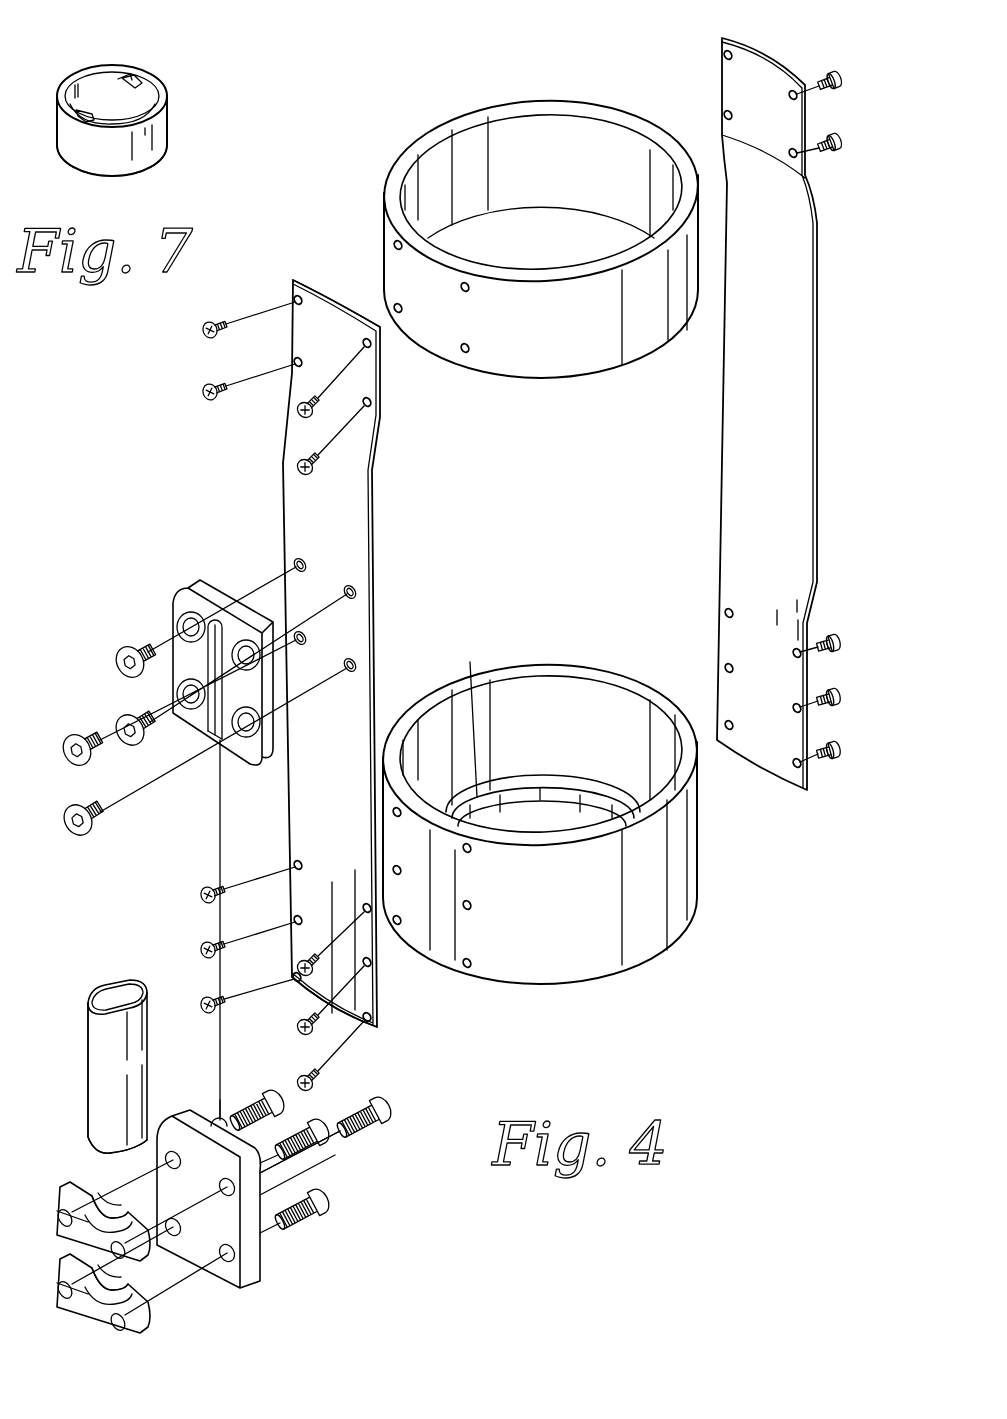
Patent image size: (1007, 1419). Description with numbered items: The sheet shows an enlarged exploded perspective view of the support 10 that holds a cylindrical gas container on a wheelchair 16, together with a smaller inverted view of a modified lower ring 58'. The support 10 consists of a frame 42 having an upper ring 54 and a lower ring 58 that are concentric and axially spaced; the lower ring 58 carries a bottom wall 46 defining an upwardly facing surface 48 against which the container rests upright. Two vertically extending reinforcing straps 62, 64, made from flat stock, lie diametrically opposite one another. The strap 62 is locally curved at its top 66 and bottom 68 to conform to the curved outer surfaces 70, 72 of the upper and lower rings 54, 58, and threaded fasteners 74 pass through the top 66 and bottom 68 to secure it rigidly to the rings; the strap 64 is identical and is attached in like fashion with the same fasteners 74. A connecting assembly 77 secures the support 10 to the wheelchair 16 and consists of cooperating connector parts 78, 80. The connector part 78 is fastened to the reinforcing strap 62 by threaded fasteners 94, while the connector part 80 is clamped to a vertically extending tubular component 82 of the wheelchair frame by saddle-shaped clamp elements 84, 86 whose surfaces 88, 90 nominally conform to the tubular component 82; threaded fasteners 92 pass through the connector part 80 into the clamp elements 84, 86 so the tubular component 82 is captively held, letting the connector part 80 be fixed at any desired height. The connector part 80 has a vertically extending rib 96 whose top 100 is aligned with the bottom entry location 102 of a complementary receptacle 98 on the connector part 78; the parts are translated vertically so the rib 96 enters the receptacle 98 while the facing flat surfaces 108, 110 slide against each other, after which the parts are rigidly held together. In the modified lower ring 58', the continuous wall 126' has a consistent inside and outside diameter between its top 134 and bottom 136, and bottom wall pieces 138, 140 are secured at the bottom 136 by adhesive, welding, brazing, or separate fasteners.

In FIG. 4, the support 10 is at (655, 64).
In FIG. 4, the wheelchair 16 is at (106, 978).
In FIG. 4, the frame 42 is at (760, 812).
In FIG. 4, the bottom wall 46 is at (550, 787).
In FIG. 4, the upwardly facing surface 48 is at (470, 662).
In FIG. 4, the upper ring 54 is at (560, 132).
In FIG. 4, the lower ring 58 is at (540, 780).
In FIG. 4, the reinforcing strap 62 is at (353, 493).
In FIG. 4, the reinforcing strap 64 is at (745, 425).
In FIG. 4, the top of strap 66 is at (325, 315).
In FIG. 4, the bottom of strap 68 is at (372, 983).
In FIG. 4, the curved outer surface 70 is at (560, 355).
In FIG. 4, the curved outer surface 72 is at (588, 940).
In FIG. 4, the threaded fasteners 74 is at (207, 320).
In FIG. 4, the connecting assembly 77 is at (88, 882).
In FIG. 4, the connector part 78 is at (205, 592).
In FIG. 4, the connector part 80 is at (233, 1220).
In FIG. 4, the tubular component 82 is at (107, 1035).
In FIG. 4, the saddle-shaped clamp element 84 is at (80, 1190).
In FIG. 4, the saddle-shaped clamp element 86 is at (78, 1265).
In FIG. 4, the conforming surface 88 is at (110, 1210).
In FIG. 4, the conforming surface 90 is at (105, 1275).
In FIG. 4, the threaded fasteners 92 is at (380, 1127).
In FIG. 4, the threaded fasteners 94 is at (118, 720).
In FIG. 4, the rib 96 is at (222, 1118).
In FIG. 4, the receptacle 98 is at (210, 707).
In FIG. 4, the top of rib 100 is at (212, 1118).
In FIG. 4, the bottom entry location 102 is at (215, 742).
In FIG. 4, the flat surface 108 is at (265, 555).
In FIG. 4, the flat surface 110 is at (262, 1172).
In FIG. 7, the continuous wall 126' is at (101, 140).
In FIG. 7, the top of continuous wall 134 is at (127, 167).
In FIG. 7, the bottom of continuous wall 136 is at (133, 76).
In FIG. 7, the bottom wall piece 138 is at (90, 110).
In FIG. 7, the bottom wall piece 140 is at (130, 72).
In FIG. 7, the modified lower ring 58' is at (152, 99).